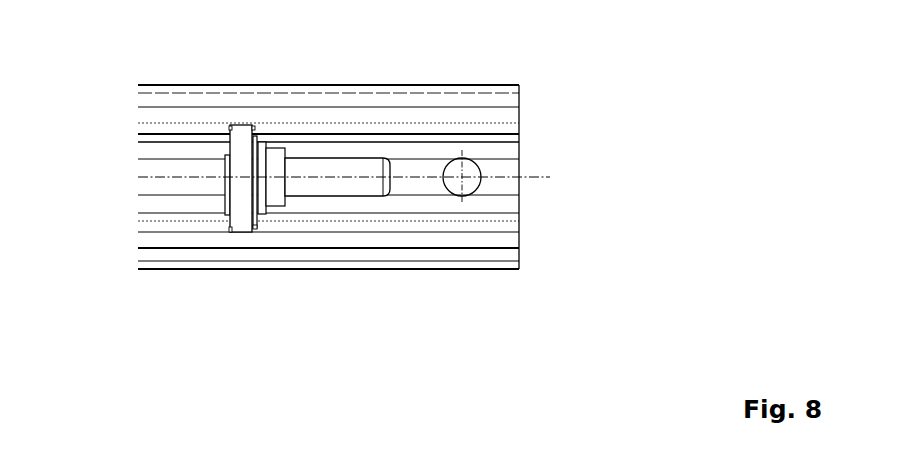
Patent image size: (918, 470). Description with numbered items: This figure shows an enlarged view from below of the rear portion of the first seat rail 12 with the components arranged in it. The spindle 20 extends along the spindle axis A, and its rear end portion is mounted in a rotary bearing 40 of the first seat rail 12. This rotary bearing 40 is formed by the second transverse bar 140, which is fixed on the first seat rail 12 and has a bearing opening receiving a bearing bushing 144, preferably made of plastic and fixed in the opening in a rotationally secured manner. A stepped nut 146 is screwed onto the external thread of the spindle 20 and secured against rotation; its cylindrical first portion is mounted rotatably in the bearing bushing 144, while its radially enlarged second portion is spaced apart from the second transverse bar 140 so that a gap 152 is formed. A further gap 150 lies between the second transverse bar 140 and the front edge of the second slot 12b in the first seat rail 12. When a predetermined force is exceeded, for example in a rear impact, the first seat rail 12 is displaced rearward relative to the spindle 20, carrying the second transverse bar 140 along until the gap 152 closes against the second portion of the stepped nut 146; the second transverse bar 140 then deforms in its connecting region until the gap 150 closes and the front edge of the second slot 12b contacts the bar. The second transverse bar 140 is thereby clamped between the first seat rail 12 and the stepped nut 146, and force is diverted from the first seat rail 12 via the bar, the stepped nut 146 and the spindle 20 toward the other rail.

The first seat rail 12 is at (437, 110).
The second slot 12b is at (248, 237).
The rotary bearing 40 is at (216, 135).
The second transverse bar 140 is at (237, 140).
The bearing bushing 144 is at (255, 140).
The stepped nut 146 is at (280, 160).
The gap 150 is at (228, 232).
The gap 152 is at (256, 229).
The spindle 20 is at (386, 239).
The spindle axis A is at (526, 177).